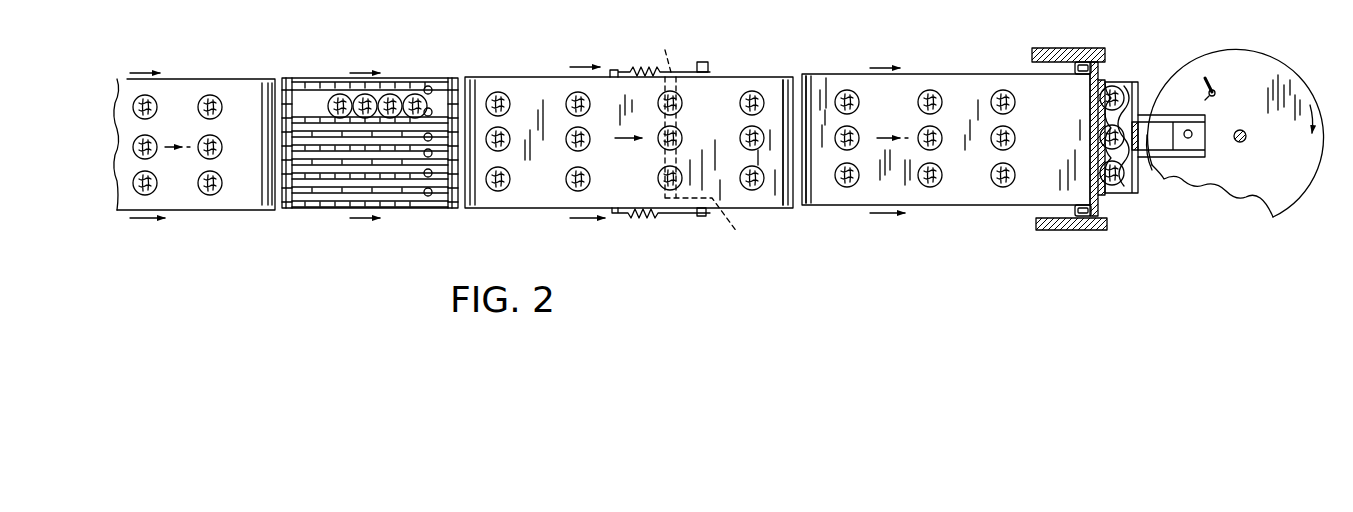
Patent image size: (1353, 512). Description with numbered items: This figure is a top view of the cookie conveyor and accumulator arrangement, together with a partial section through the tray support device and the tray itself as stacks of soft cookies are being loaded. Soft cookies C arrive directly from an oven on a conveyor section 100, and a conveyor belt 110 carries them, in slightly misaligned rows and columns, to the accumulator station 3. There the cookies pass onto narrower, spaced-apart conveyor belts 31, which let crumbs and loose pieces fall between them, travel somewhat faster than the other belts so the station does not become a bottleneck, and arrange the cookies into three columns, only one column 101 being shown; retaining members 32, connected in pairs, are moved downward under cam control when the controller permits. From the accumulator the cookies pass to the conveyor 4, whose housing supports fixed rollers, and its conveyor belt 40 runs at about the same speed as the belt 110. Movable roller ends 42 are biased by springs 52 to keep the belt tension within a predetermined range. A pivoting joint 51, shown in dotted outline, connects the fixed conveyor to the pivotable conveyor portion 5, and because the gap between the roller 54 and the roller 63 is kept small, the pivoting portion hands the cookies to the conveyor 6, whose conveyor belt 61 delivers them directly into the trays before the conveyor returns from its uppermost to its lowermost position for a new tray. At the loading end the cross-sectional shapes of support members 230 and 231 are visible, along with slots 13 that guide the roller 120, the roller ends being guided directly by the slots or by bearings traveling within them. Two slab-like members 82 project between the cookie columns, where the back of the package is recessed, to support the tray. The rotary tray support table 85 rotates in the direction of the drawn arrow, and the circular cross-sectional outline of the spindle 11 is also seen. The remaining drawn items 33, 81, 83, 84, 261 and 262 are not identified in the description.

The conveyor section 100 is at (192, 70).
The conveyor belt 110 is at (265, 128).
The cookies C is at (135, 107).
The stacker side wall 33 is at (292, 78).
The column 101 is at (335, 84).
The accumulator station 3 is at (373, 135).
The conveyor belts 31 is at (373, 155).
The retaining member 32 is at (431, 86).
The conveyor 4 is at (560, 62).
The conveyor belt 40 is at (740, 118).
The springs 52 is at (640, 70).
The pivoting joint 51 is at (704, 144).
The movable roller ends 42 is at (702, 62).
The pivotable conveyor portion 5 is at (742, 65).
The roller 54 is at (786, 76).
The roller 63 is at (804, 76).
The conveyor 6 is at (860, 65).
The conveyor belt 61 is at (1053, 121).
The support member 231 is at (1042, 48).
The support member 230 is at (1060, 230).
The slots 13 is at (1075, 68).
The roller 120 is at (1098, 70).
The containers in cradle 81 is at (1120, 88).
The slab-like members 82 is at (1140, 85).
The cam follower 262 is at (1214, 90).
The cam track 261 is at (1215, 93).
The pivot pin 83 is at (1191, 132).
The spindle 11 is at (1246, 136).
The piston rod 84 is at (1202, 150).
The rotary tray support table 85 is at (1292, 183).